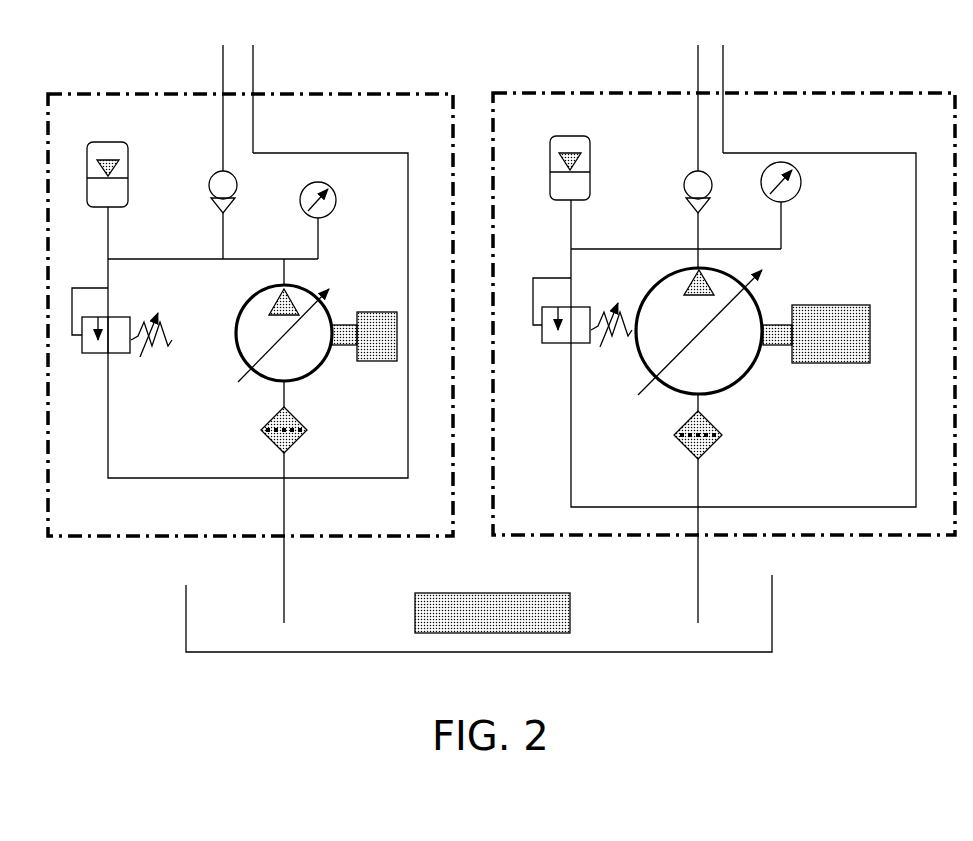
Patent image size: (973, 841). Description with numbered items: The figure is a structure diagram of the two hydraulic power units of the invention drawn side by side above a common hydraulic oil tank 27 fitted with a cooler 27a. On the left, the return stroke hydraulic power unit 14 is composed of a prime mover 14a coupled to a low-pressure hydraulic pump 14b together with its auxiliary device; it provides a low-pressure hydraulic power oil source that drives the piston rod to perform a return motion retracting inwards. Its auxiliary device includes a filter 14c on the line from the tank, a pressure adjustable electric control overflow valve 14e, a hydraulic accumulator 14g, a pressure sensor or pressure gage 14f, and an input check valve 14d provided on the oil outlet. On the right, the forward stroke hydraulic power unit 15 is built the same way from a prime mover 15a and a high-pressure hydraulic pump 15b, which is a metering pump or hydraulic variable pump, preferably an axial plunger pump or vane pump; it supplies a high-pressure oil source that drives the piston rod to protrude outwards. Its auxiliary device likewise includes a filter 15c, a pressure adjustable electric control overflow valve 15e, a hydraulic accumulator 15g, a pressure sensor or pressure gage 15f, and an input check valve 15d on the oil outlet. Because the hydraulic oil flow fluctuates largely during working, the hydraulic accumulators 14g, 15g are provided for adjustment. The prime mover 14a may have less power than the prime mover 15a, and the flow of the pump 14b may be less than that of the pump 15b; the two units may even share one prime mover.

The return stroke hydraulic power unit 14 is at (165, 84).
The prime mover 14a is at (367, 343).
The low-pressure hydraulic pump 14b is at (233, 331).
The filter 14c is at (272, 447).
The input check valve 14d is at (209, 189).
The pressure adjustable electric control overflow valve 14e is at (121, 358).
The pressure gage 14f is at (366, 202).
The hydraulic accumulator 14g is at (129, 194).
The forward stroke hydraulic power unit 15 is at (782, 85).
The prime mover 15a is at (801, 325).
The high-pressure hydraulic pump 15b is at (699, 331).
The filter 15c is at (678, 447).
The input check valve 15d is at (676, 183).
The pressure adjustable electric control overflow valve 15e is at (548, 346).
The pressure gage 15f is at (830, 222).
The hydraulic accumulator 15g is at (592, 184).
The hydraulic oil tank 27 is at (479, 613).
The cooler 27a is at (492, 613).